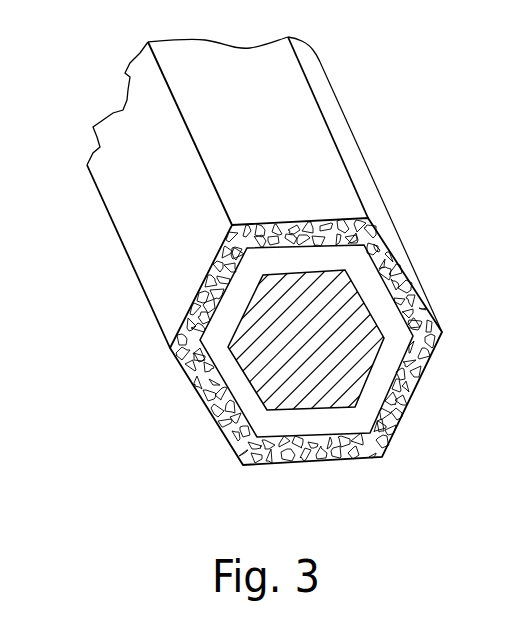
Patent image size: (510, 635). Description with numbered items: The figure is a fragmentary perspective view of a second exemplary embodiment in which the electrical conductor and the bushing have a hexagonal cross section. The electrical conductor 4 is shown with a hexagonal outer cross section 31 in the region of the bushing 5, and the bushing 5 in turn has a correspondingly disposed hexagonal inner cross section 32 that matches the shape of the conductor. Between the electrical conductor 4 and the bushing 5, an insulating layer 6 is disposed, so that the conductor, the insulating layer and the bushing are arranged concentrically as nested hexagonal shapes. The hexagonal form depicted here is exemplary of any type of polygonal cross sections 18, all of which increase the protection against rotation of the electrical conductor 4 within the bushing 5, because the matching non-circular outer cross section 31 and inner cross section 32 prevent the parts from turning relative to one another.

The polygonal cross sections 18 is at (213, 305).
The bushing 5 is at (295, 220).
The insulating layer 6 is at (408, 285).
The electrical conductor 4 is at (316, 313).
The hexagonal outer cross section 31 is at (243, 358).
The hexagonal inner cross section 32 is at (386, 383).